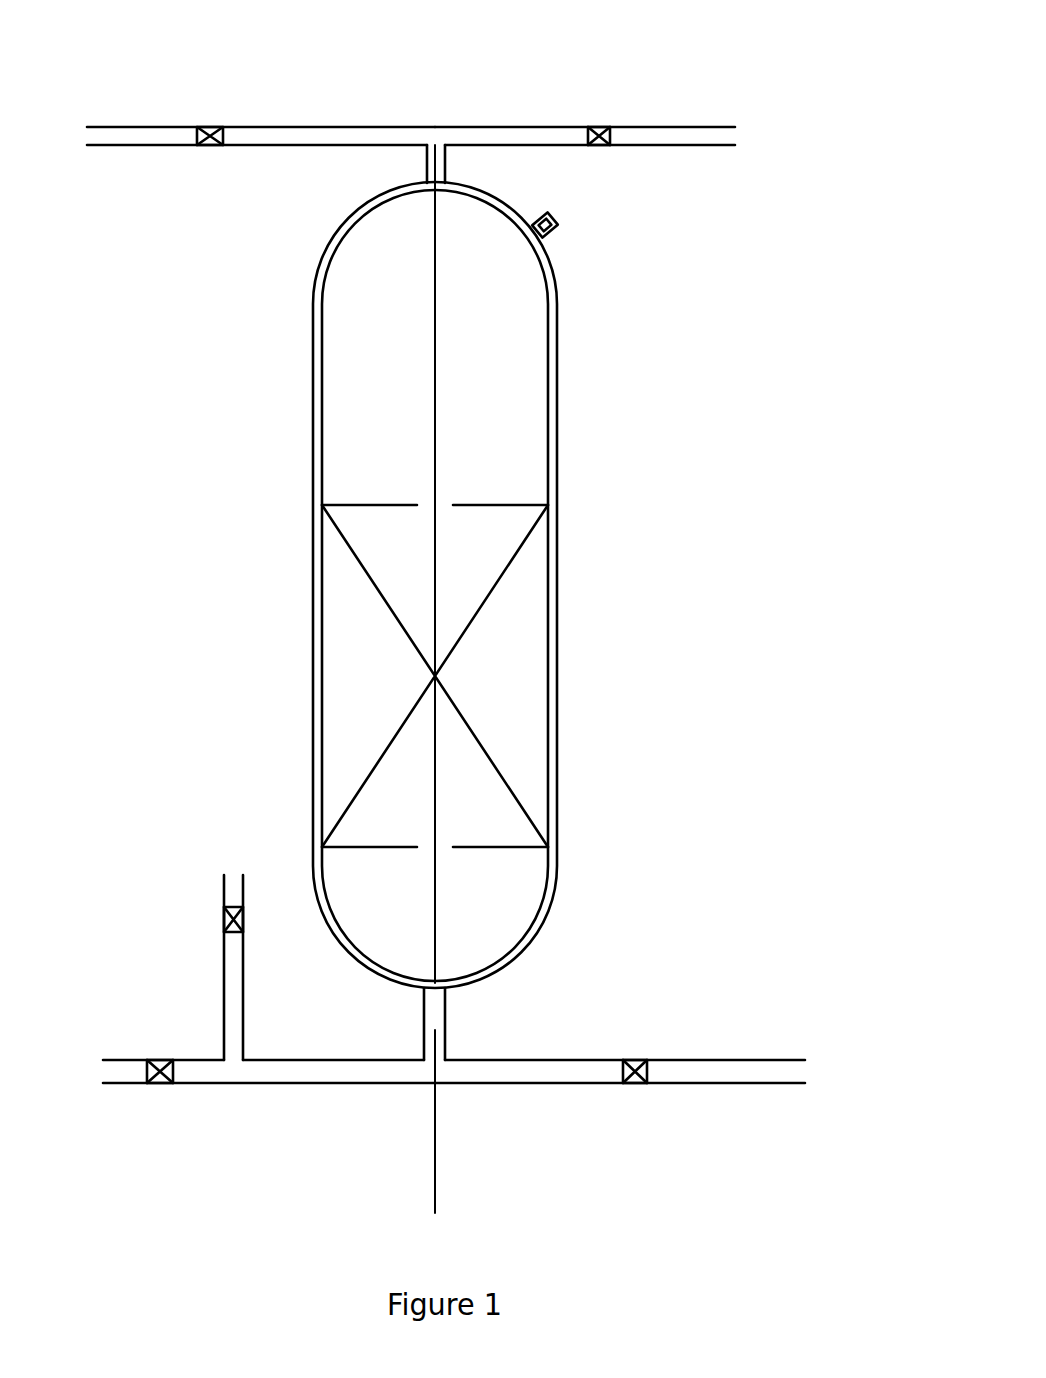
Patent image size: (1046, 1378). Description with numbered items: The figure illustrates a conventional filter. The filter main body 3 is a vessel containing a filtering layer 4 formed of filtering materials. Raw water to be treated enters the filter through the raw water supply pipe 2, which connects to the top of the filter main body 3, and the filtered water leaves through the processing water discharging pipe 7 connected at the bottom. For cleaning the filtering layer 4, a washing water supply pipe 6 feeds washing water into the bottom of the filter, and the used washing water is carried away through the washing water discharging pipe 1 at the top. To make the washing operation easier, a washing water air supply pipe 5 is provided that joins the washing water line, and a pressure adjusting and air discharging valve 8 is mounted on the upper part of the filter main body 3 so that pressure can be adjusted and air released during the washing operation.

The washing water discharging pipe 1 is at (267, 127).
The raw water supply pipe 2 is at (531, 126).
The filter main body 3 is at (557, 475).
The filtering layer 4 is at (497, 678).
The washing water air supply pipe 5 is at (223, 985).
The washing water supply pipe 6 is at (237, 1087).
The processing water discharging pipe 7 is at (693, 1058).
The pressure adjusting and air discharging valve 8 is at (556, 228).